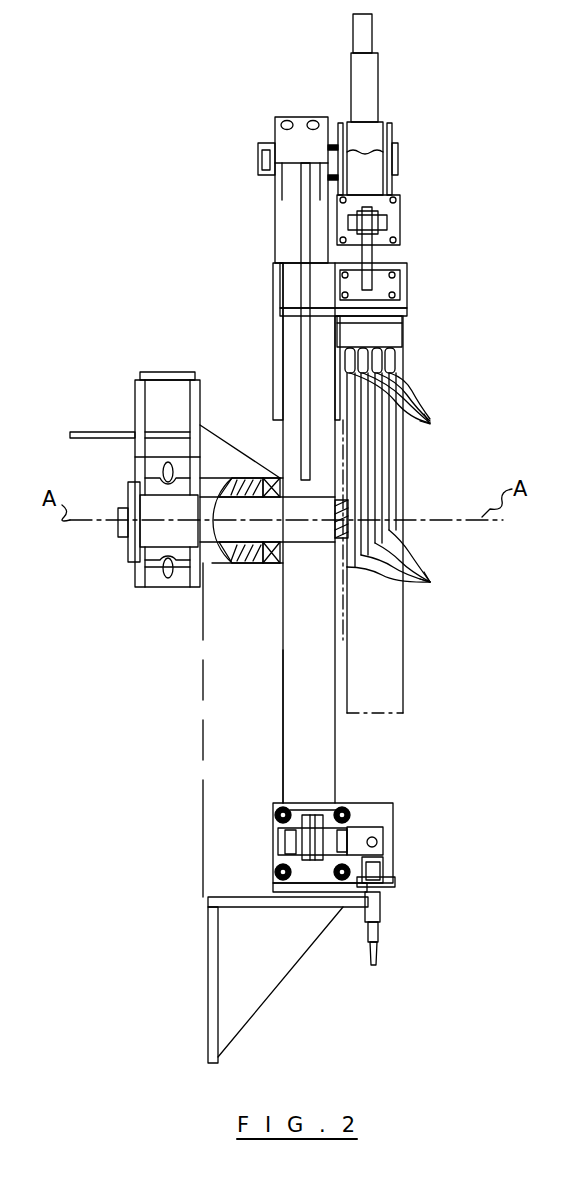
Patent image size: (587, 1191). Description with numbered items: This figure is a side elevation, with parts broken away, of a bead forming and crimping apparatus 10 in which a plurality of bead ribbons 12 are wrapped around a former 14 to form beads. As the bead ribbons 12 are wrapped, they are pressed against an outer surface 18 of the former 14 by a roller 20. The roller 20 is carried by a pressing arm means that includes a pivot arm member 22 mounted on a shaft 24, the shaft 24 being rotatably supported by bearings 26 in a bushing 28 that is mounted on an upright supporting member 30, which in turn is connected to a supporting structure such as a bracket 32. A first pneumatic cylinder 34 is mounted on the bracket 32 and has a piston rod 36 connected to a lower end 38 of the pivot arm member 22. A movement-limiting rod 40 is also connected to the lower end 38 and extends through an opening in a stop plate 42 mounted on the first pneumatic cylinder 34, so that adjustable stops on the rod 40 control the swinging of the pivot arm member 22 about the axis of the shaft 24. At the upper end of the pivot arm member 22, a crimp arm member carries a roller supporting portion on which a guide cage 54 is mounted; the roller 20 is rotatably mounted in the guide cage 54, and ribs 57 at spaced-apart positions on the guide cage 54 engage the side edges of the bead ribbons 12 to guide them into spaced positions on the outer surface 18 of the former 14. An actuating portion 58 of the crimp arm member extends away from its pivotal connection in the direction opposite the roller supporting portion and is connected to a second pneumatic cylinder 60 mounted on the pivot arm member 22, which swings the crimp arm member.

The bead forming and crimping apparatus 10 is at (493, 443).
The bead ribbons 12 is at (404, 567).
The former 14 is at (397, 665).
The outer surface 18 is at (385, 713).
The roller 20 is at (395, 360).
The pivot arm member 22 is at (302, 642).
The shaft 24 is at (242, 532).
The bearings 26 is at (268, 478).
The bushing 28 is at (212, 484).
The upright supporting member 30 is at (212, 697).
The bracket 32 is at (213, 970).
The first pneumatic cylinder 34 is at (274, 822).
The piston rod 36 is at (280, 842).
The lower end 38 is at (292, 757).
The movement-limiting rod 40 is at (378, 842).
The stop plate 42 is at (390, 818).
The guide cage 54 is at (387, 343).
The ribs 57 is at (406, 411).
The actuating portion 58 is at (372, 70).
The second pneumatic cylinder 60 is at (392, 186).